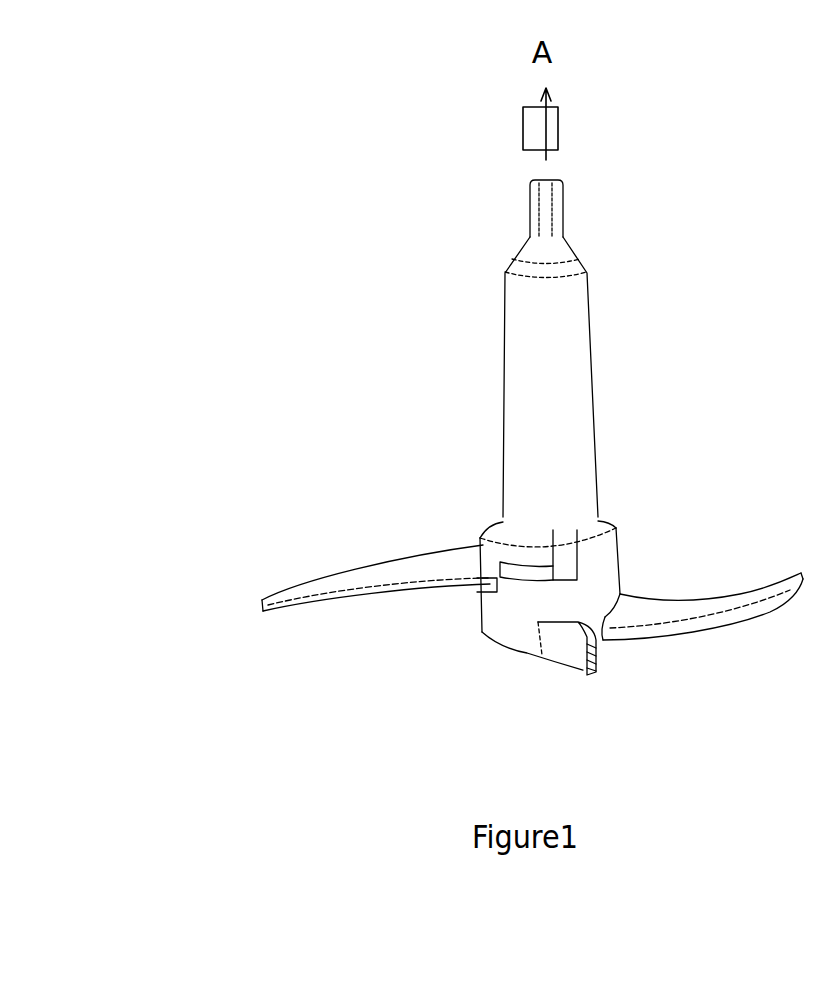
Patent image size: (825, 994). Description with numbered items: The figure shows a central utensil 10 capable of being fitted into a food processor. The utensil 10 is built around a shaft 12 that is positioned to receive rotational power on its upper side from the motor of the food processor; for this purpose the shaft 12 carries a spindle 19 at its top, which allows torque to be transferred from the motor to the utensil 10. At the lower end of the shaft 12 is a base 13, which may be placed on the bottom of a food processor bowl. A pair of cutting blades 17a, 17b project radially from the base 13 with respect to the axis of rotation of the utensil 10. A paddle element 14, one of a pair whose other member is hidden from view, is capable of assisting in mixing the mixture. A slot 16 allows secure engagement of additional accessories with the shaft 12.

The central utensil 10 is at (641, 287).
The shaft 12 is at (515, 352).
The base 13 is at (500, 623).
The paddle element 14 is at (572, 653).
The slot 16 is at (567, 555).
The cutting blade 17a is at (348, 570).
The cutting blade 17b is at (717, 597).
The spindle 19 is at (529, 205).